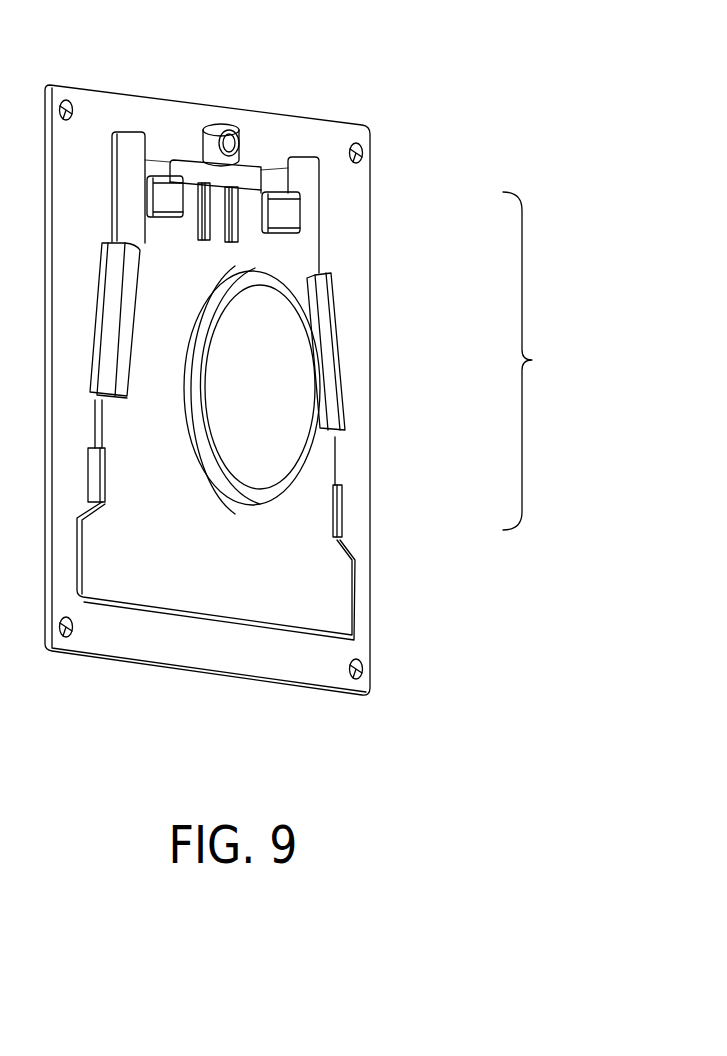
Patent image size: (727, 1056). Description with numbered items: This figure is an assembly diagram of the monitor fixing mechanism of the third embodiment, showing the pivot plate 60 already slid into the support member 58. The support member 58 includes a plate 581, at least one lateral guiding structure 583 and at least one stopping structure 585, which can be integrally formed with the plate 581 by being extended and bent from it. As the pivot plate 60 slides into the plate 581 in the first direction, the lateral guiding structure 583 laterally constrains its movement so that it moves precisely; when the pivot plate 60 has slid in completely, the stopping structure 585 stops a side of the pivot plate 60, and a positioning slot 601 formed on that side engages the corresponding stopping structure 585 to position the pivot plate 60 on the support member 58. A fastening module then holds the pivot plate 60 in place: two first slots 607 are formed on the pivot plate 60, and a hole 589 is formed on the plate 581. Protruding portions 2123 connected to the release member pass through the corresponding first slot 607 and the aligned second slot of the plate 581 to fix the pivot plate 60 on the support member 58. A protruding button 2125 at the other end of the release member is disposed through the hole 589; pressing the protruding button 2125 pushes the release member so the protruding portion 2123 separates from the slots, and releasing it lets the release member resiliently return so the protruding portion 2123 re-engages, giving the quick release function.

The pivot plate 60 is at (360, 613).
The positioning slot 601 is at (152, 95).
The support member 58 is at (535, 361).
The plate 581 is at (358, 418).
The lateral guiding structure 583 is at (325, 333).
The stopping structure 585 is at (282, 212).
The first slot 607 is at (238, 204).
The hole 589 is at (211, 115).
The protruding button 2125 is at (233, 119).
The protruding portion 2123 is at (157, 146).